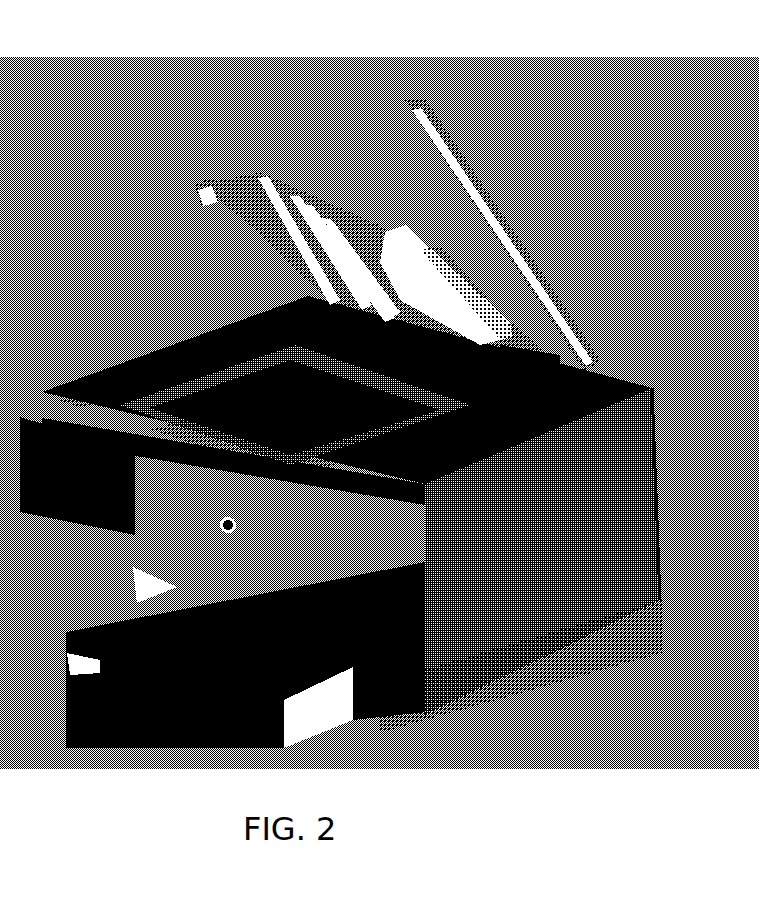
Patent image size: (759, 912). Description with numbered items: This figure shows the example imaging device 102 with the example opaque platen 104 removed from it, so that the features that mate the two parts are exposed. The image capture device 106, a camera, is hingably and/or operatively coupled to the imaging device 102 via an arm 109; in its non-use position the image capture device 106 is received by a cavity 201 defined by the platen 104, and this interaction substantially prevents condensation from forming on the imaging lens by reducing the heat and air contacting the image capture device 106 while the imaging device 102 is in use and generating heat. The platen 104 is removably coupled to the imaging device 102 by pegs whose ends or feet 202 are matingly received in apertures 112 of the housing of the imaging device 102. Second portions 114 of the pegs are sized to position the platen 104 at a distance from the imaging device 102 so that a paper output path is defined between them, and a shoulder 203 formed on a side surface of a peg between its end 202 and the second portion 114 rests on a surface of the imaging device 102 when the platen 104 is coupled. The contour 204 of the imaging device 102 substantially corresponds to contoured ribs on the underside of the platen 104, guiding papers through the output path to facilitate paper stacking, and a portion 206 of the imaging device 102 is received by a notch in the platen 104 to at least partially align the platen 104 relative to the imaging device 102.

The imaging device 102 is at (642, 534).
The opaque platen 104 is at (250, 185).
The image capture device 106 is at (320, 58).
The arm 109 is at (474, 200).
The apertures 112 is at (173, 377).
The second portions of the pegs 114 is at (203, 192).
The cavity 201 is at (316, 210).
The ends or feet 202 is at (202, 203).
The shoulder 203 is at (430, 258).
The contour 204 is at (236, 462).
The portion 206 is at (545, 353).